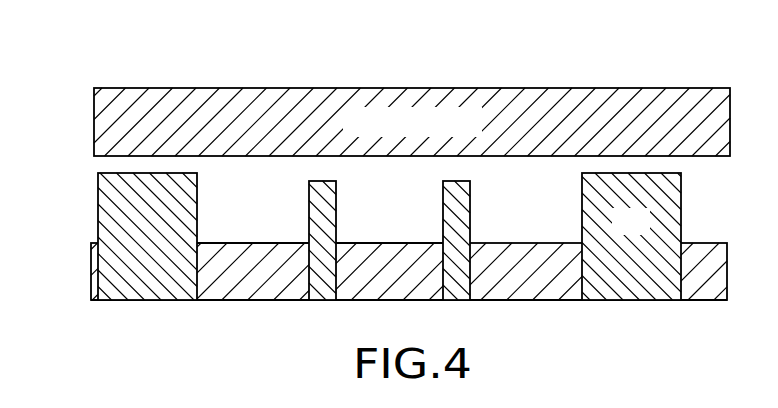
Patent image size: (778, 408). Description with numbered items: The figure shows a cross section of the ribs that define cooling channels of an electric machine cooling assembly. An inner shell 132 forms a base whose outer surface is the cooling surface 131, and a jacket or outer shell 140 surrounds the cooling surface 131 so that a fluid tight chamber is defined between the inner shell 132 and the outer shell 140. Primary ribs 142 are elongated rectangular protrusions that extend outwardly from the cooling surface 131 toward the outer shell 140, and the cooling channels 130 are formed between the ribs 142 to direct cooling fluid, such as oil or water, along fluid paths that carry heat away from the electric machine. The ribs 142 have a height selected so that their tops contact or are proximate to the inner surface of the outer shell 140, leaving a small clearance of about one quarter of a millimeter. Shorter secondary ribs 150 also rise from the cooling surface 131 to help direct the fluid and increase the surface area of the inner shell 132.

The outer shell 140 is at (170, 102).
The ribs 142 is at (130, 210).
The secondary ribs 150 is at (470, 210).
The cooling channels 130 is at (233, 230).
The cooling surface 131 is at (365, 242).
The inner shell 132 is at (137, 291).